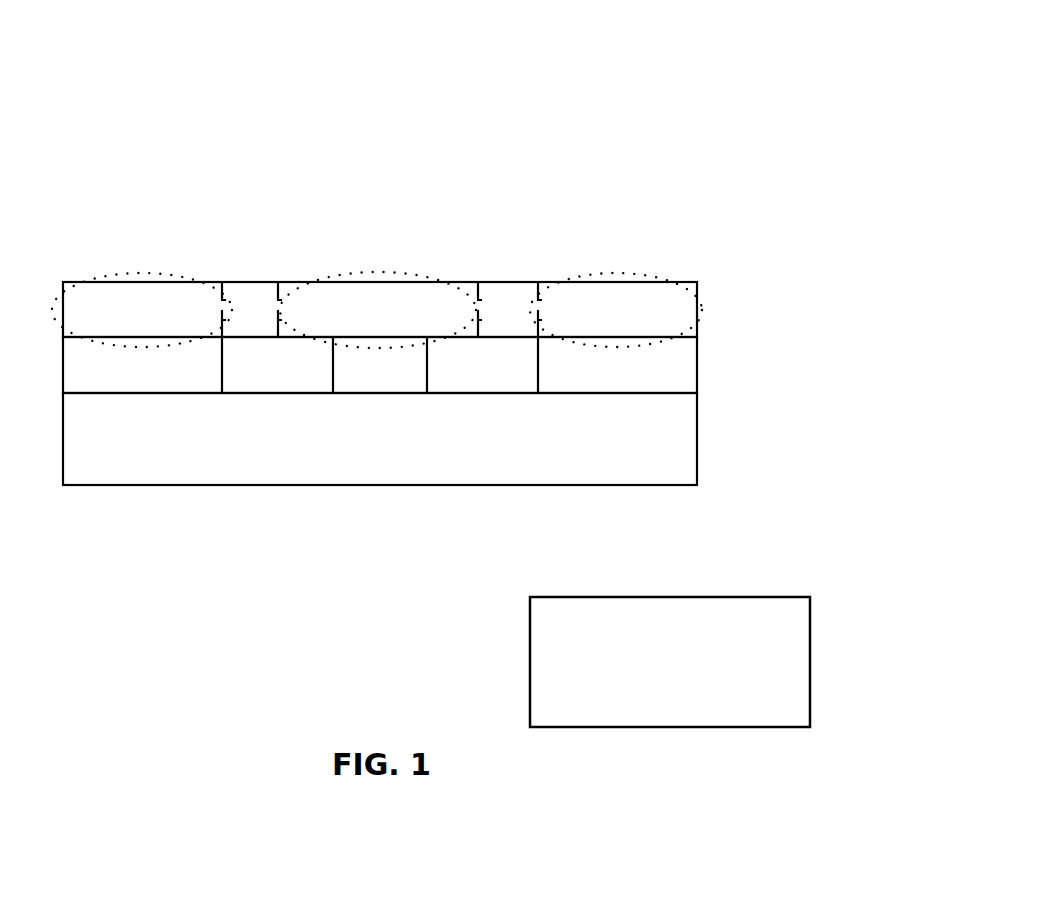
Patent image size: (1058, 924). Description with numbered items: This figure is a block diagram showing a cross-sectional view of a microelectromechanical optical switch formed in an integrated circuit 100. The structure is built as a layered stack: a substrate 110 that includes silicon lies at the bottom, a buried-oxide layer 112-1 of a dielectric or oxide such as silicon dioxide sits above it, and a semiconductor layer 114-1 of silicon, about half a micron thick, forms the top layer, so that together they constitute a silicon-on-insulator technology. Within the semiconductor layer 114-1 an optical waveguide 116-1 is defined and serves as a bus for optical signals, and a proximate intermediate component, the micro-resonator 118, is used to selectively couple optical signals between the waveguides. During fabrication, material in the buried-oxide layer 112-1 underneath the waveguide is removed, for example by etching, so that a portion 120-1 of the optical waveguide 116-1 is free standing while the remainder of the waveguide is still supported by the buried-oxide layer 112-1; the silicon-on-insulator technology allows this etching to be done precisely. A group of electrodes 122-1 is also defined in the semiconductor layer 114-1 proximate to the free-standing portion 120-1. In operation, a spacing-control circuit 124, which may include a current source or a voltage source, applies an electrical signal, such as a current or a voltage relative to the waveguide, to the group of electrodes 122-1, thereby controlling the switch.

The integrated circuit 100 is at (642, 82).
The substrate 110 is at (622, 448).
The buried-oxide layer 112-1 is at (633, 372).
The semiconductor layer 114-1 is at (710, 337).
The optical waveguide 116-1 is at (512, 300).
The micro-resonator 118 is at (327, 342).
The portion 120-1 is at (222, 270).
The group of electrodes 122-1 is at (645, 275).
The spacing-control circuit 124 is at (670, 662).